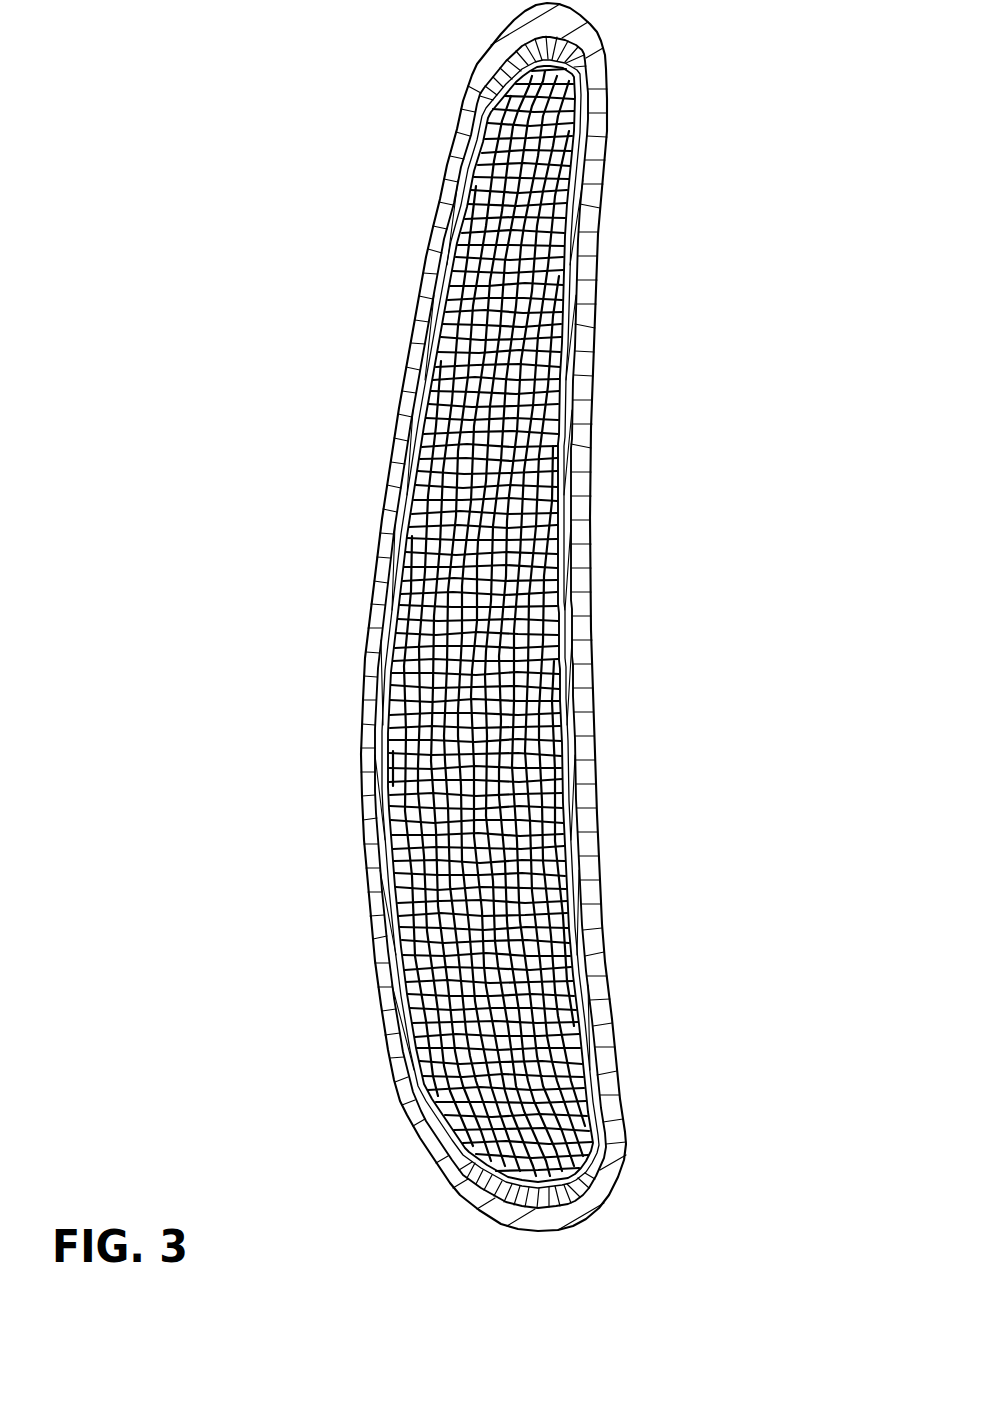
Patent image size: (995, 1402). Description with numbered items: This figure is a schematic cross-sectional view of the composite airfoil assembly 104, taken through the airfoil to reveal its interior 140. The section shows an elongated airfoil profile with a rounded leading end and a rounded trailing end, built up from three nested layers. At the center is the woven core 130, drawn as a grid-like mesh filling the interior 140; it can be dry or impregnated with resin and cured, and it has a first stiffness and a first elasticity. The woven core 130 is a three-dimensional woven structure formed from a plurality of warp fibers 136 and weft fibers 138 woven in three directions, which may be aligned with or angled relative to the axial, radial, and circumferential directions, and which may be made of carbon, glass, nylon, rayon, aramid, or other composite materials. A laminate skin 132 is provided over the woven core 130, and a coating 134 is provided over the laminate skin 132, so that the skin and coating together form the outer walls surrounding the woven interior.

The composite airfoil assembly 104 is at (377, 113).
The woven core 130 is at (550, 293).
The laminate skin 132 is at (565, 470).
The coating 134 is at (583, 394).
The warp fibers 136 is at (437, 477).
The weft fibers 138 is at (417, 510).
The interior 140 is at (567, 75).